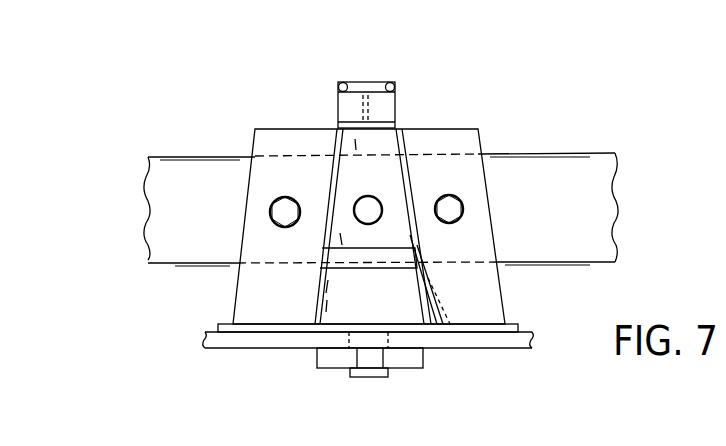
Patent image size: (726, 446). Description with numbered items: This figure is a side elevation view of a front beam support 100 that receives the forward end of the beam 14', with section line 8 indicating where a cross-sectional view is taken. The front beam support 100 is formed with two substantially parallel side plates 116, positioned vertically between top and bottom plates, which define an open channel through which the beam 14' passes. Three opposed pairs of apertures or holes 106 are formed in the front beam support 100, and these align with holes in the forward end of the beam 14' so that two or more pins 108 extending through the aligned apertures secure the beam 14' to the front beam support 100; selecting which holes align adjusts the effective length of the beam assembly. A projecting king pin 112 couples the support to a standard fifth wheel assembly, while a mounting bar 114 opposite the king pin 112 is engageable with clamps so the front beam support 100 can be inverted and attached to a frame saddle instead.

The section line 8- 8 is at (284, 26).
The beam 14' is at (381, 190).
The front beam support 100 is at (606, 77).
The apertures or holes 106 is at (285, 197).
The pins 108 is at (283, 212).
The king pin 112 is at (380, 371).
The mounting bar 114 is at (393, 83).
The side plates 116 is at (281, 305).